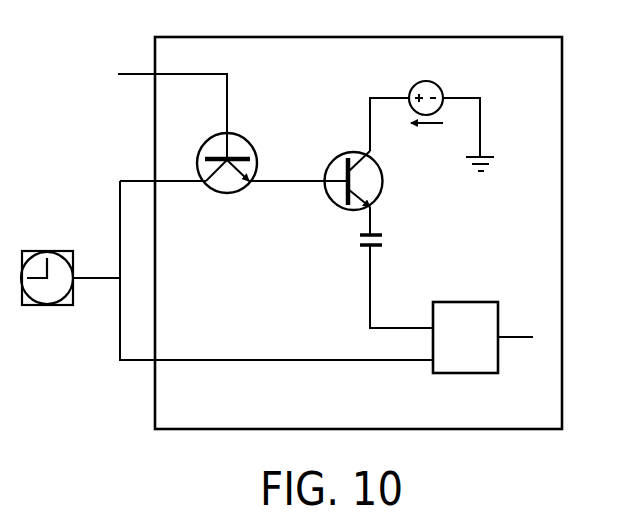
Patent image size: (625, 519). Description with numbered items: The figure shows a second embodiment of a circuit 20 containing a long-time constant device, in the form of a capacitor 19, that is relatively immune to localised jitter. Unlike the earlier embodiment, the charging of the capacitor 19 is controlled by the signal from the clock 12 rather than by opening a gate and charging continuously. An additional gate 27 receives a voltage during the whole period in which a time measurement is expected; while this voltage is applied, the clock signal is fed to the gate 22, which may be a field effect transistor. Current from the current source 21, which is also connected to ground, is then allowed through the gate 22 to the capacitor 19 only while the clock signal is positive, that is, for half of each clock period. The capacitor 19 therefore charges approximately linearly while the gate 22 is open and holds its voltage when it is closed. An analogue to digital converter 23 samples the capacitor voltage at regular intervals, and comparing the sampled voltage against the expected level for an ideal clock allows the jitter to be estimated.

The clock 12 is at (57, 252).
The capacitor 19 is at (383, 237).
The circuit 20 is at (155, 135).
The current source 21 is at (425, 80).
The gate 22 is at (337, 152).
The analogue to digital converter 23 is at (466, 301).
The gate 27 is at (243, 133).